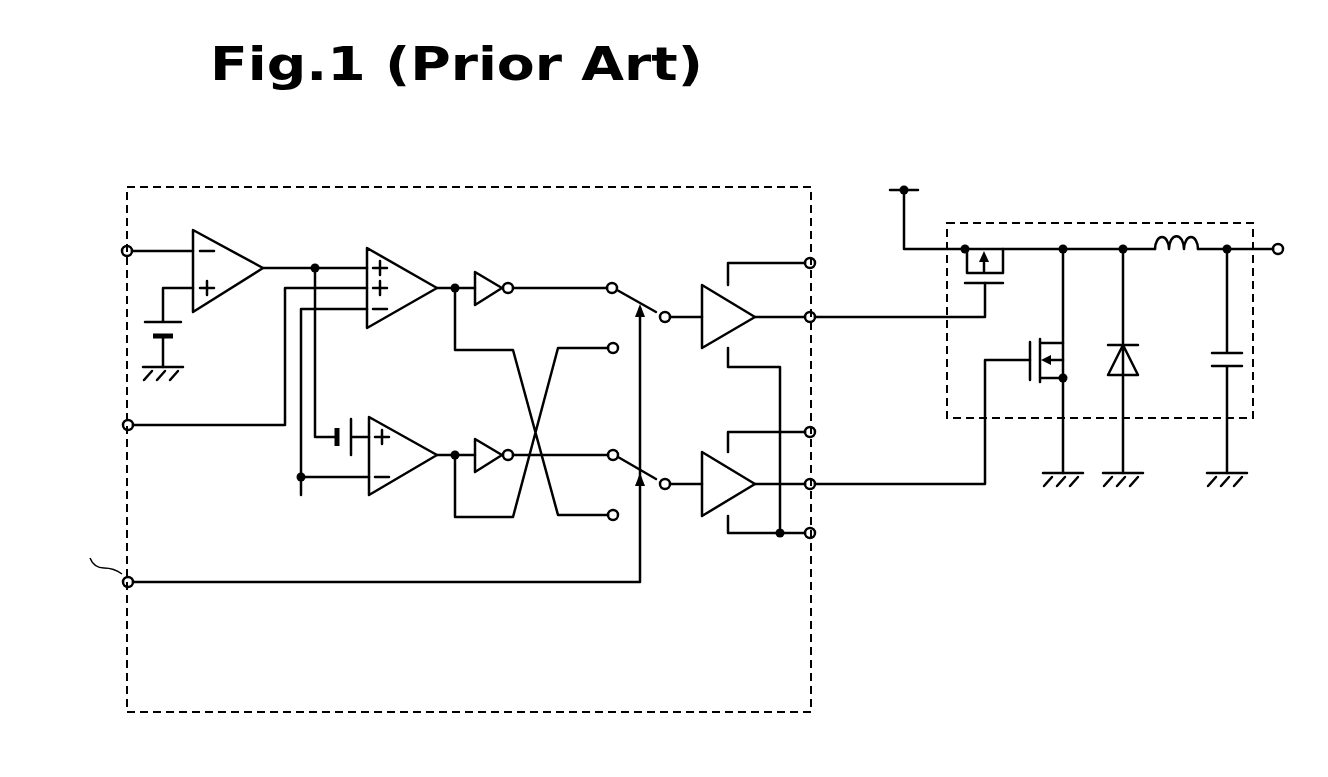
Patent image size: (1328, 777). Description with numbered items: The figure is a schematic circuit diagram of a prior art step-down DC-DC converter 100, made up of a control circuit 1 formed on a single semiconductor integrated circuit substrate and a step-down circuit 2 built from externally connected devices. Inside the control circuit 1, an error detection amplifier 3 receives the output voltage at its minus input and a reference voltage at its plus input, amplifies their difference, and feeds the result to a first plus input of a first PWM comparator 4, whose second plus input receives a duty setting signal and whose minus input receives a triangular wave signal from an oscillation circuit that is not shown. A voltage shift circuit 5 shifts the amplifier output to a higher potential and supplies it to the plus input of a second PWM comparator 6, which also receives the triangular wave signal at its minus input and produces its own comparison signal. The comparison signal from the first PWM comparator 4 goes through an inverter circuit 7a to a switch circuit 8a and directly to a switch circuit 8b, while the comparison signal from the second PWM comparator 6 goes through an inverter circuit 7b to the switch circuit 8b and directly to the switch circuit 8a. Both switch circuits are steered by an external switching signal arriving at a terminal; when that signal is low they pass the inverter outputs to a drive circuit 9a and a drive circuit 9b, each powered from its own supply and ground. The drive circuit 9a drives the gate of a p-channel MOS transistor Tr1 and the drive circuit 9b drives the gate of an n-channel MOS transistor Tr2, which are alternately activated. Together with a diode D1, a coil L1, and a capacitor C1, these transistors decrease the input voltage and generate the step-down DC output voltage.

The step-down DC-DC converter 100 is at (1160, 120).
The control circuit 1 is at (760, 186).
The step-down circuit 2 is at (1069, 223).
The error detection amplifier 3 is at (230, 251).
The first PWM comparator 4 is at (406, 262).
The voltage shift circuit 5 is at (348, 422).
The second PWM comparator 6 is at (408, 417).
The inverter circuit 7a is at (488, 273).
The inverter circuit 7b is at (488, 439).
The switch circuit 8a is at (632, 297).
The switch circuit 8b is at (652, 471).
The drive circuit 9a is at (718, 285).
The drive circuit 9b is at (718, 452).
The p-channel MOS transistor Tr1 is at (993, 247).
The n-channel MOS transistor Tr2 is at (1048, 342).
The coil L1 is at (1195, 235).
The diode D1 is at (1137, 355).
The capacitor C1 is at (1240, 353).